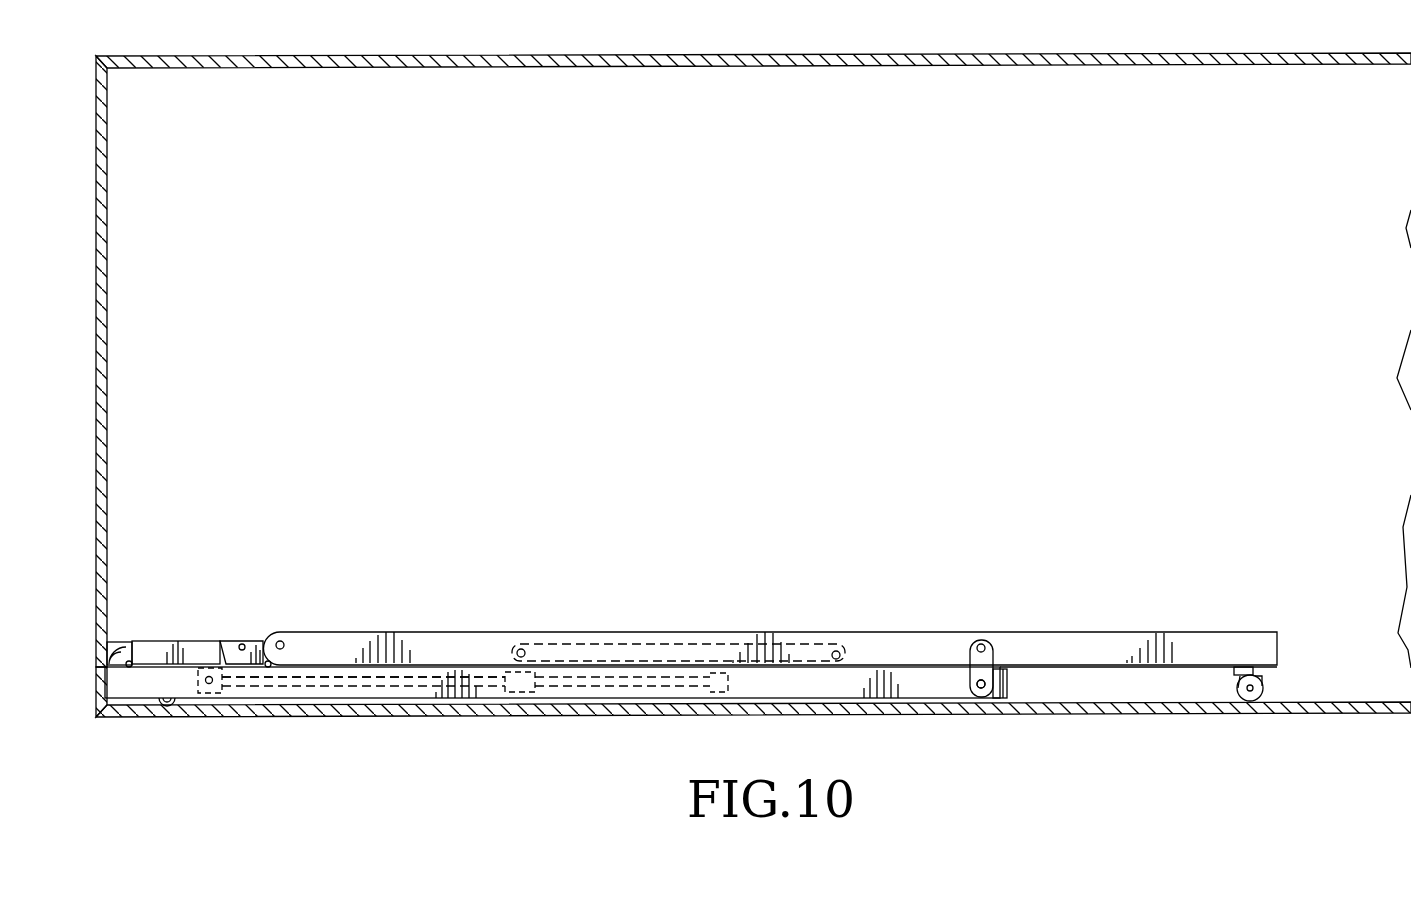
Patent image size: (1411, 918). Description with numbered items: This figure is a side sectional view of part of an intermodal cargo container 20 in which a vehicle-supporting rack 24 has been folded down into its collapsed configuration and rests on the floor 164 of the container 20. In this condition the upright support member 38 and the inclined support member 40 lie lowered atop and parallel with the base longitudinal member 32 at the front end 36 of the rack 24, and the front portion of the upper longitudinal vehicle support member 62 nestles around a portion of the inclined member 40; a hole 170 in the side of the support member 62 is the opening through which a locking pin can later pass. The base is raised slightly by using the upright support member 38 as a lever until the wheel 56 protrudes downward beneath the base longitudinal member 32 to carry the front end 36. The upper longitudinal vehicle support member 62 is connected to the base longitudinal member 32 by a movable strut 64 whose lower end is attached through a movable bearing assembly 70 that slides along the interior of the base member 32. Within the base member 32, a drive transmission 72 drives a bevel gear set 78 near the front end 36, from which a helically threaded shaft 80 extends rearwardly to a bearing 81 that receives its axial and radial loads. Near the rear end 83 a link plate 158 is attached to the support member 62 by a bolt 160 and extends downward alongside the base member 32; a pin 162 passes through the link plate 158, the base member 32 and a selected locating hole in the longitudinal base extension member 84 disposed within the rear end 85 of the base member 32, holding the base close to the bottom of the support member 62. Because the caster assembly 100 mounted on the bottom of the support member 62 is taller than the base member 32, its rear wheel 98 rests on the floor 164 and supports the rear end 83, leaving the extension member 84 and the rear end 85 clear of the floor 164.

The intermodal cargo container 20 is at (1010, 53).
The vehicle-supporting rack 24 is at (681, 604).
The base longitudinal member 32 is at (815, 686).
The front end 36 is at (93, 682).
The upright support member 38 is at (182, 641).
The inclined support member 40 is at (245, 641).
The wheel 56 is at (170, 706).
The upper longitudinal vehicle support member 62 is at (386, 632).
The movable strut 64 is at (578, 645).
The movable bearing assembly 70 is at (515, 693).
The drive transmission 72 is at (117, 642).
The bevel gear set 78 is at (205, 700).
The helically threaded shaft 80 is at (360, 686).
The bearing 81 is at (728, 692).
The rear end 83 is at (1295, 631).
The longitudinal base extension member 84 is at (1010, 688).
The rear end of base longitudinal member 85 is at (1010, 674).
The rear wheel 98 is at (1265, 692).
The caster assembly 100 is at (1234, 676).
The link plate 158 is at (968, 655).
The bolt 160 is at (985, 648).
The pin 162 is at (982, 688).
The floor 164 is at (1353, 702).
The hole 170 is at (284, 645).